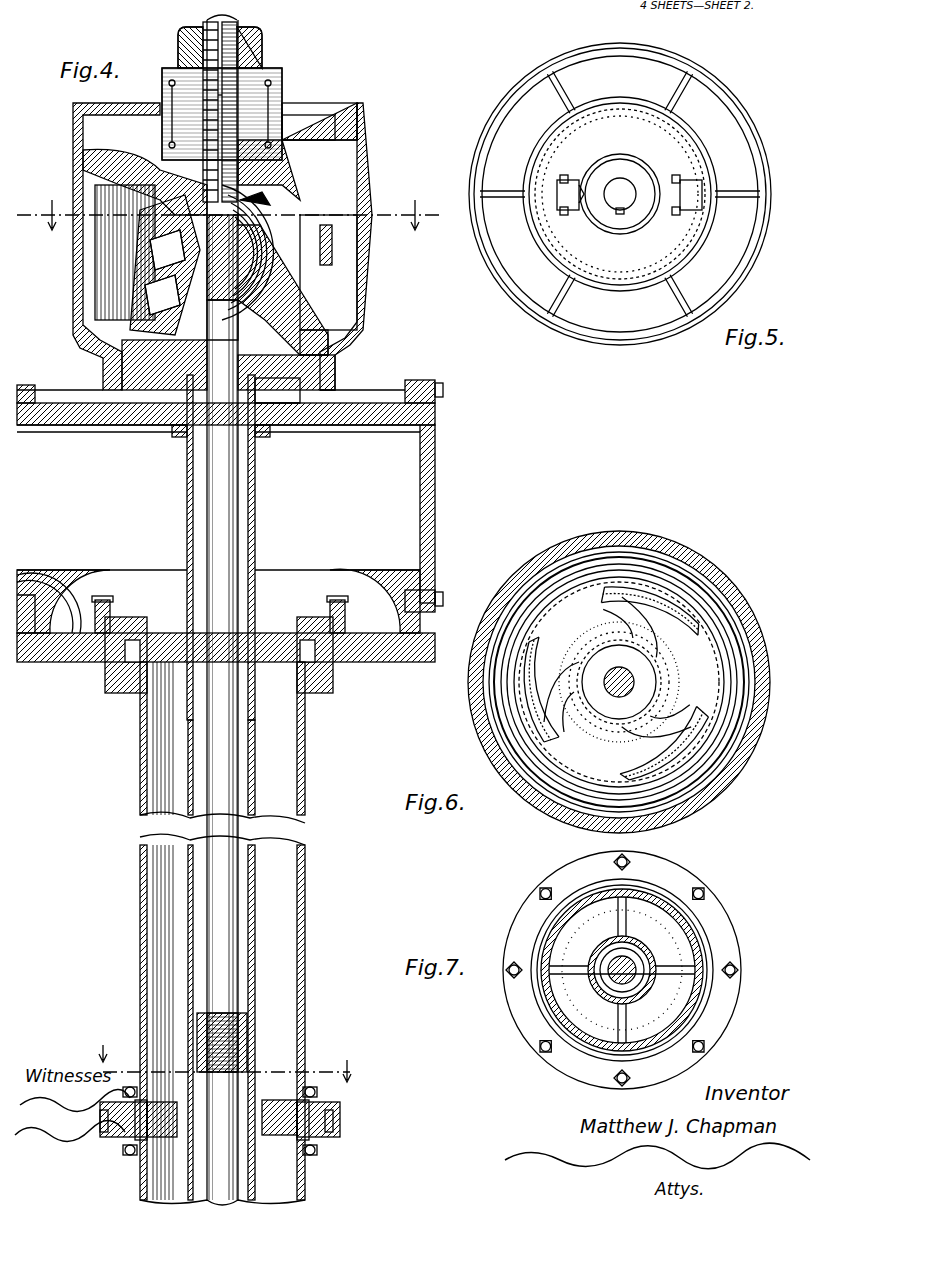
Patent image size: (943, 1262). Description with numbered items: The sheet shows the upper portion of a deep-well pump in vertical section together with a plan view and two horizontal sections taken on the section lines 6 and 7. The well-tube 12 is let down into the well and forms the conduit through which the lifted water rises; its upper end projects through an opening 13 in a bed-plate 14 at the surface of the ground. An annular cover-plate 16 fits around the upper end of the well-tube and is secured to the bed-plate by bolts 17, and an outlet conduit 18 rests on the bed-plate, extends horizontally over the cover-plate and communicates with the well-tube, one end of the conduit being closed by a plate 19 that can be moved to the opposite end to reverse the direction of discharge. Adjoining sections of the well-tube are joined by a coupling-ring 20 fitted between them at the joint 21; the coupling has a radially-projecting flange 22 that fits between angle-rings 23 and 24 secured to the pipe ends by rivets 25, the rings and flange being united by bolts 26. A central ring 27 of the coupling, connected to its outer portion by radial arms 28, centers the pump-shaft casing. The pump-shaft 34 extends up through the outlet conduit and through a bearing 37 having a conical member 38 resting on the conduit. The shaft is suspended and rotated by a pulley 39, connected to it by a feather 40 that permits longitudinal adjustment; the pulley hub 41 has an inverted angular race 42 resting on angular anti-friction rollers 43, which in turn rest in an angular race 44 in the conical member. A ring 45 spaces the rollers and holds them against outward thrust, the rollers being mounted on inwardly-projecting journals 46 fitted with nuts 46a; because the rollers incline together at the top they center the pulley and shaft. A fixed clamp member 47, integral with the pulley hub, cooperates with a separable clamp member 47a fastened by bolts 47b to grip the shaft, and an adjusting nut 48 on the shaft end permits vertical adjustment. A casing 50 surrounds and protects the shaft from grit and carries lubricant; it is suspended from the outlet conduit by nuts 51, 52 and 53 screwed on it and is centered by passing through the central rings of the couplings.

In FIG. 4, the section line 6— 6 is at (228, 215).
In FIG. 4, the section line 7— 7 is at (225, 1065).
In FIG. 4, the well-tube 12 is at (305, 925).
In FIG. 7, the well-tube 12 is at (700, 990).
In FIG. 4, the opening 13 is at (310, 680).
In FIG. 4, the bed-plate 14 is at (425, 634).
In FIG. 4, the annular cover-plate 16 is at (310, 628).
In FIG. 4, the bolts 17 is at (104, 605).
In FIG. 4, the outlet conduit 18 is at (395, 465).
In FIG. 4, the plate 19 is at (436, 500).
In FIG. 4, the coupling-ring 20 is at (272, 1125).
In FIG. 7, the coupling-ring 20 is at (675, 1012).
In FIG. 4, the joint between well-tube sections 21 is at (279, 1105).
In FIG. 4, the radially-projecting flange 22 is at (340, 1122).
In FIG. 4, the angle-ring 23 is at (325, 1140).
In FIG. 4, the angle-ring 24 is at (335, 1108).
In FIG. 7, the angle-ring 24 is at (730, 957).
In FIG. 4, the rivets 25 is at (318, 1090).
In FIG. 7, the rivets 25 is at (700, 935).
In FIG. 4, the bolts 26 is at (320, 1150).
In FIG. 7, the bolts 26 is at (630, 862).
In FIG. 4, the central ring 27 is at (262, 1090).
In FIG. 7, the central ring 27 is at (620, 996).
In FIG. 7, the radial arms 28 is at (622, 970).
In FIG. 4, the pump-shaft 34 is at (228, 550).
In FIG. 5, the pump-shaft 34 is at (620, 190).
In FIG. 6, the pump-shaft 34 is at (637, 682).
In FIG. 7, the pump-shaft 34 is at (610, 980).
In FIG. 4, the bearing 37 is at (237, 320).
In FIG. 6, the bearing 37 is at (560, 778).
In FIG. 4, the conical member 38 is at (267, 289).
In FIG. 6, the conical member 38 is at (690, 695).
In FIG. 4, the pulley 39 is at (365, 160).
In FIG. 5, the pulley 39 is at (752, 150).
In FIG. 6, the pulley 39 is at (698, 565).
In FIG. 4, the feather 40 is at (237, 96).
In FIG. 5, the feather 40 is at (618, 214).
In FIG. 4, the hub 41 is at (282, 153).
In FIG. 5, the hub 41 is at (640, 275).
In FIG. 4, the inverted angular race 42 is at (284, 197).
In FIG. 4, the angular anti-friction rollers 43 is at (125, 287).
In FIG. 6, the angular anti-friction rollers 43 is at (535, 632).
In FIG. 4, the angular race 44 is at (330, 335).
In FIG. 6, the angular race 44 is at (735, 718).
In FIG. 4, the ring 45 is at (332, 250).
In FIG. 6, the ring 45 is at (725, 665).
In FIG. 4, the inwardly-projecting journals 46 is at (130, 258).
In FIG. 4, the nuts 46a is at (110, 340).
In FIG. 4, the fixed clamp member 47 is at (270, 107).
In FIG. 5, the fixed clamp member 47 is at (560, 190).
In FIG. 5, the separable clamp member 47a is at (566, 208).
In FIG. 4, the bolts 47b is at (172, 142).
In FIG. 5, the bolts 47b is at (676, 176).
In FIG. 4, the adjusting nut 48 is at (256, 45).
In FIG. 5, the adjusting nut 48 is at (630, 215).
In FIG. 4, the casing 50 is at (252, 872).
In FIG. 7, the casing 50 is at (606, 962).
In FIG. 4, the nut 51 is at (270, 398).
In FIG. 4, the nut 52 is at (282, 385).
In FIG. 4, the nut 53 is at (265, 430).